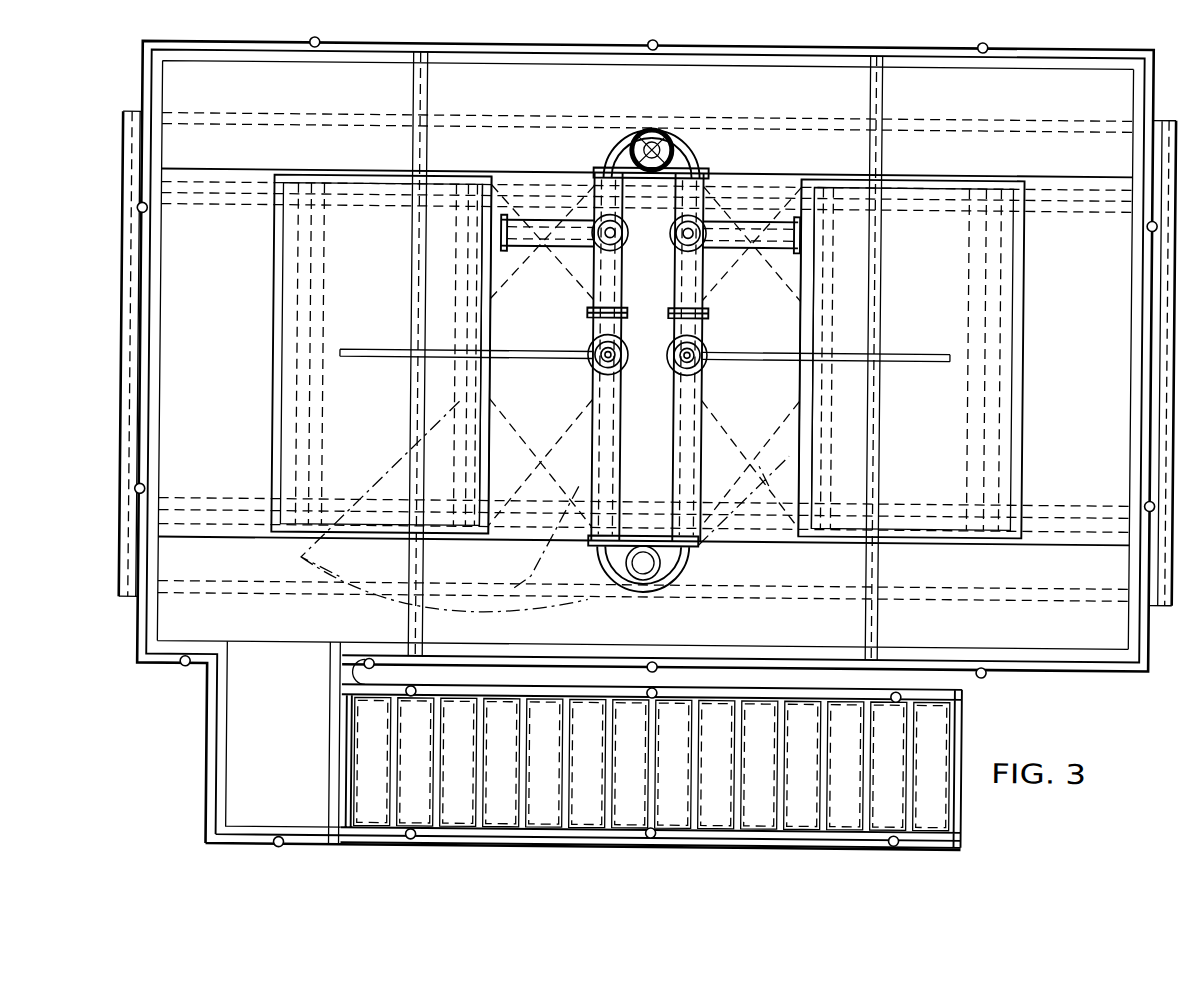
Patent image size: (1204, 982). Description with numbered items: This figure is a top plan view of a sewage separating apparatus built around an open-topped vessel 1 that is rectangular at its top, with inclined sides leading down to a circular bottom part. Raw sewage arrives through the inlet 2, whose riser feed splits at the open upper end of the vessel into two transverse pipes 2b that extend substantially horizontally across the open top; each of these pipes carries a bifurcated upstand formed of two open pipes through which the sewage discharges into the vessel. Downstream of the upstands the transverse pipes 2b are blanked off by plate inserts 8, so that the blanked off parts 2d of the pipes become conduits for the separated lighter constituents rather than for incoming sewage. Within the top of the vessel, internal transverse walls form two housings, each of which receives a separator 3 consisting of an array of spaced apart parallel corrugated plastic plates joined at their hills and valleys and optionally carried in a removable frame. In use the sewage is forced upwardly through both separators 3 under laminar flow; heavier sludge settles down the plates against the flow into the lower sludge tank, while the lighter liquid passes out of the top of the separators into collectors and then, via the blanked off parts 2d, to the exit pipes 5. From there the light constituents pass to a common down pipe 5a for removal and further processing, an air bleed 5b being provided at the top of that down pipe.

The vessel 1 is at (118, 354).
The inlet 2 is at (650, 585).
The transverse pipes 2b is at (688, 458).
The blanked off parts 2d is at (592, 290).
The separator 3 is at (386, 326).
The exit pipes 5 is at (463, 313).
The common down pipe 5a is at (637, 128).
The air bleed 5b is at (662, 128).
The plate inserts 8 is at (588, 312).